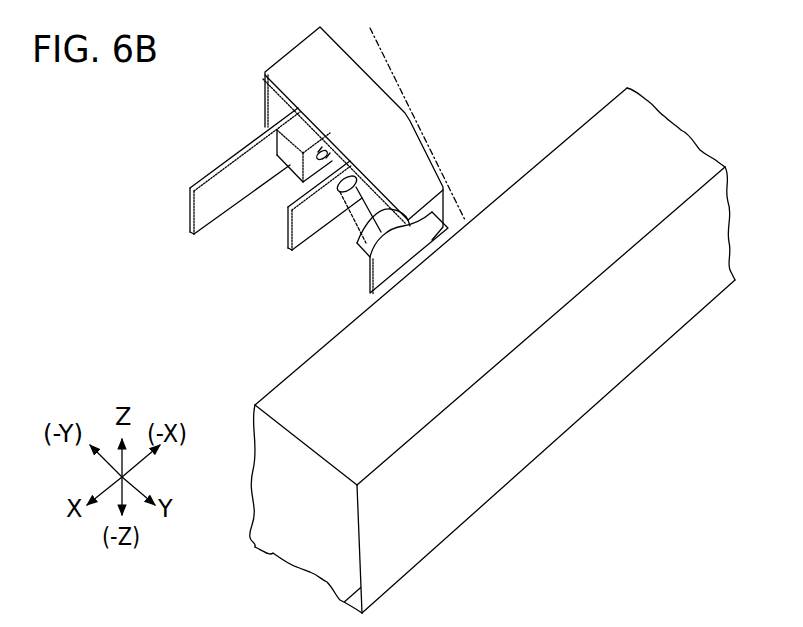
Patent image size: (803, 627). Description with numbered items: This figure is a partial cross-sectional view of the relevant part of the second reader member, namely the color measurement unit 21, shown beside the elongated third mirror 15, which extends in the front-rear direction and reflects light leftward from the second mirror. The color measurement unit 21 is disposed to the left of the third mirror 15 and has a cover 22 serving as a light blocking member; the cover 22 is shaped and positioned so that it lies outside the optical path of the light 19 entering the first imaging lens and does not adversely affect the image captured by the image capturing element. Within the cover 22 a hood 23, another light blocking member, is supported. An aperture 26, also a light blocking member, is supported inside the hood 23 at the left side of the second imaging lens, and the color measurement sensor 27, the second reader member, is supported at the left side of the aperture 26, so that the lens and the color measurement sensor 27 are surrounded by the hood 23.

The third plane-shaped mirror 15 is at (317, 375).
The light 19 is at (391, 62).
The color measurement unit 21 is at (187, 250).
The cover 22 is at (313, 42).
The hood 23 is at (412, 257).
The aperture 26 is at (313, 220).
The color measurement sensor 27 is at (295, 167).